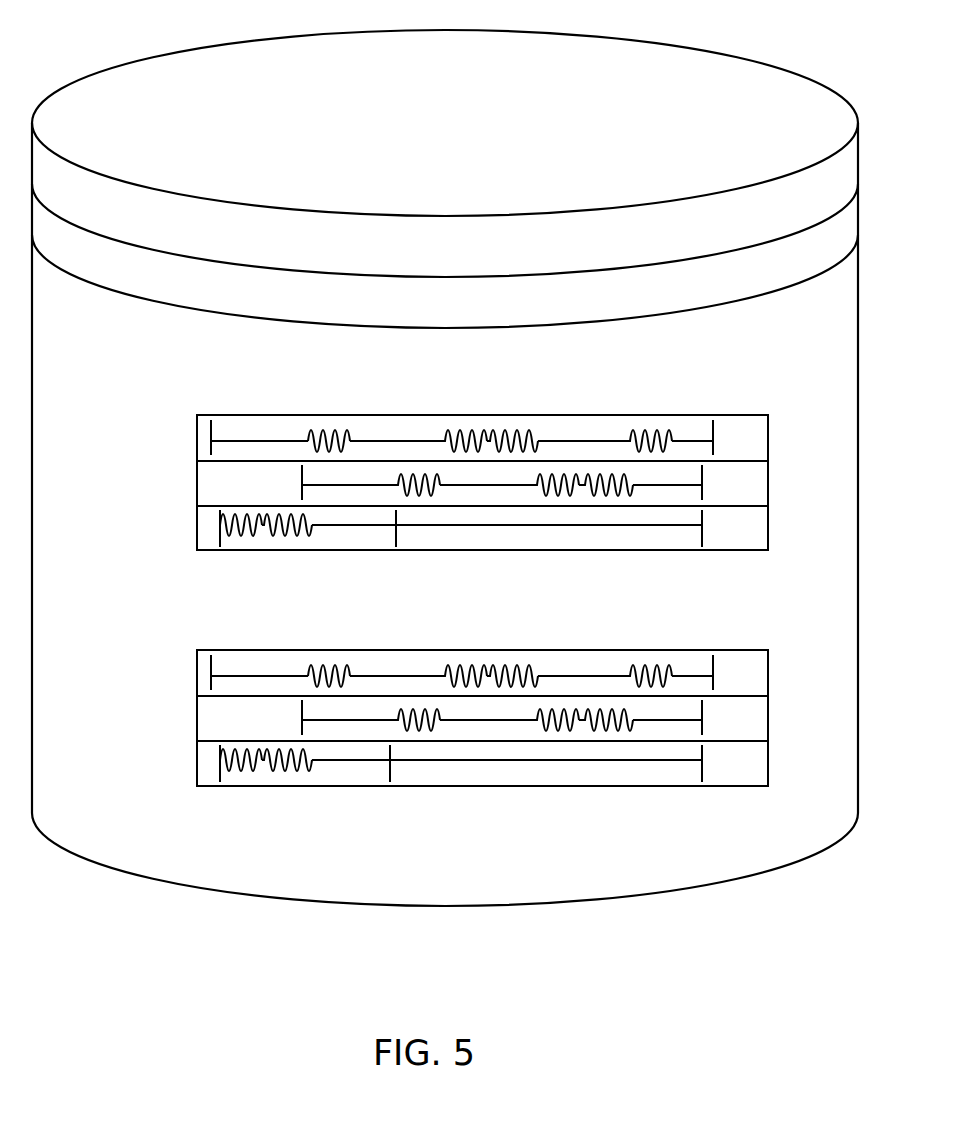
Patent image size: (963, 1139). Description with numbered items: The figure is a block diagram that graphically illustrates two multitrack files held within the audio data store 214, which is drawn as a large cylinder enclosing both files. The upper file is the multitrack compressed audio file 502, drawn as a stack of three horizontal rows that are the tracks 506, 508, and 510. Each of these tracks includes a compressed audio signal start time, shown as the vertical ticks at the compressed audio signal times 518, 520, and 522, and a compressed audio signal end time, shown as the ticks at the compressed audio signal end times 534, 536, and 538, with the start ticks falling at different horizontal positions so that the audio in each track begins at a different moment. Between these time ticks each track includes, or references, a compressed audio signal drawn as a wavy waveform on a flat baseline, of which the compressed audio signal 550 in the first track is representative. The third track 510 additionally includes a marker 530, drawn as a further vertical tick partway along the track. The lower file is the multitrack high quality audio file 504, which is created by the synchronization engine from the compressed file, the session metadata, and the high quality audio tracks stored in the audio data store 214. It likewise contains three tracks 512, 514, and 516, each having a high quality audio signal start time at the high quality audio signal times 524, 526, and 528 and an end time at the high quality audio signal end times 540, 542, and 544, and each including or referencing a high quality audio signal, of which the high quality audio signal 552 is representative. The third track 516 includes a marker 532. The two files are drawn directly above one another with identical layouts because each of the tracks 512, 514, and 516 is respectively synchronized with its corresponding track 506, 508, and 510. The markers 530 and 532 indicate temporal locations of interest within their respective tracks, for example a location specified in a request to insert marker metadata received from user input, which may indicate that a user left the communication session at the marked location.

The audio data store 214 is at (722, 53).
The multitrack compressed audio file 502 is at (737, 414).
The multitrack high quality audio file 504 is at (718, 648).
The track 506 is at (197, 441).
The track 508 is at (197, 478).
The track 510 is at (197, 522).
The track 512 is at (197, 675).
The track 514 is at (197, 715).
The track 516 is at (197, 762).
The compressed audio signal time 518 is at (210, 422).
The compressed audio signal time 520 is at (302, 475).
The compressed audio signal time 522 is at (220, 530).
The high quality audio signal time 524 is at (210, 665).
The high quality audio signal time 526 is at (302, 712).
The high quality audio signal time 528 is at (220, 772).
The marker 530 is at (396, 532).
The marker 532 is at (390, 775).
The compressed audio signal end time 534 is at (713, 422).
The compressed audio signal end time 536 is at (702, 470).
The compressed audio signal end time 538 is at (702, 515).
The high quality audio signal end time 540 is at (713, 657).
The high quality audio signal end time 542 is at (702, 705).
The high quality audio signal end time 544 is at (702, 750).
The compressed audio signal 550 is at (310, 435).
The high quality audio signal 552 is at (310, 670).